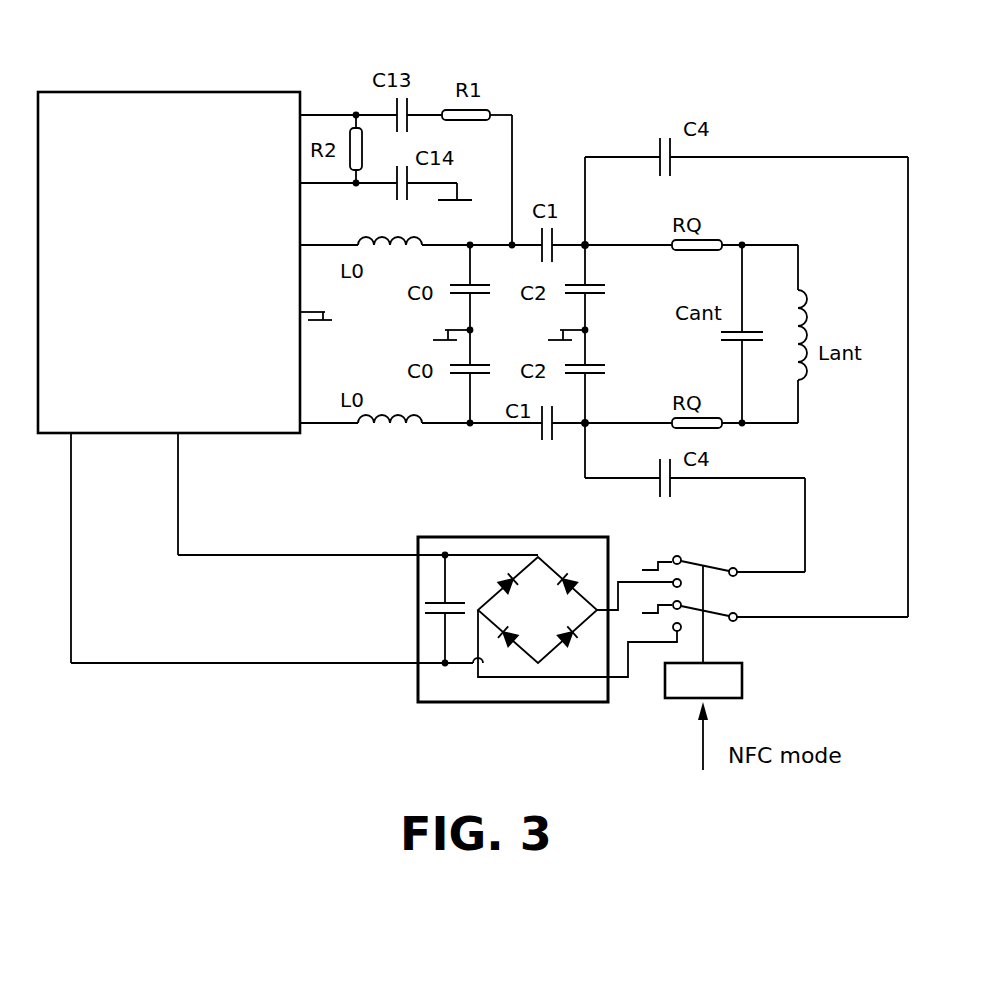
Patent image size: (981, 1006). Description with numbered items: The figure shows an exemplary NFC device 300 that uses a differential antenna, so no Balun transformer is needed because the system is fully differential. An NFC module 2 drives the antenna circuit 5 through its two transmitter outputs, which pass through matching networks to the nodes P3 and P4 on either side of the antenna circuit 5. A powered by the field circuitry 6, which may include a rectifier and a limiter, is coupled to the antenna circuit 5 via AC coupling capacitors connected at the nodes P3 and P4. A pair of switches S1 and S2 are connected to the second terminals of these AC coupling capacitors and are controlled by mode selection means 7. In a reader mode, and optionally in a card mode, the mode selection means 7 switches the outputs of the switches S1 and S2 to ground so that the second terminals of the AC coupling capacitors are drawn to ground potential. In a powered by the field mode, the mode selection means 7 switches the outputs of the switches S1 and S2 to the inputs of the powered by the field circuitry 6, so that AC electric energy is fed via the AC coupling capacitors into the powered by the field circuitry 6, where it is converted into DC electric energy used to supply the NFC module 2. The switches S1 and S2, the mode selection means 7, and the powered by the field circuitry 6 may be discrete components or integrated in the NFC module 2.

The NFC device / antenna circuit 300 is at (786, 85).
The NFC module 2 is at (137, 92).
The antenna circuit 5 is at (810, 222).
The powered by the field circuitry 6 is at (416, 682).
The mode selection means 7 is at (742, 680).
The node P3 is at (590, 241).
The node P4 is at (590, 420).
The switch S1 is at (700, 566).
The switch S2 is at (713, 619).